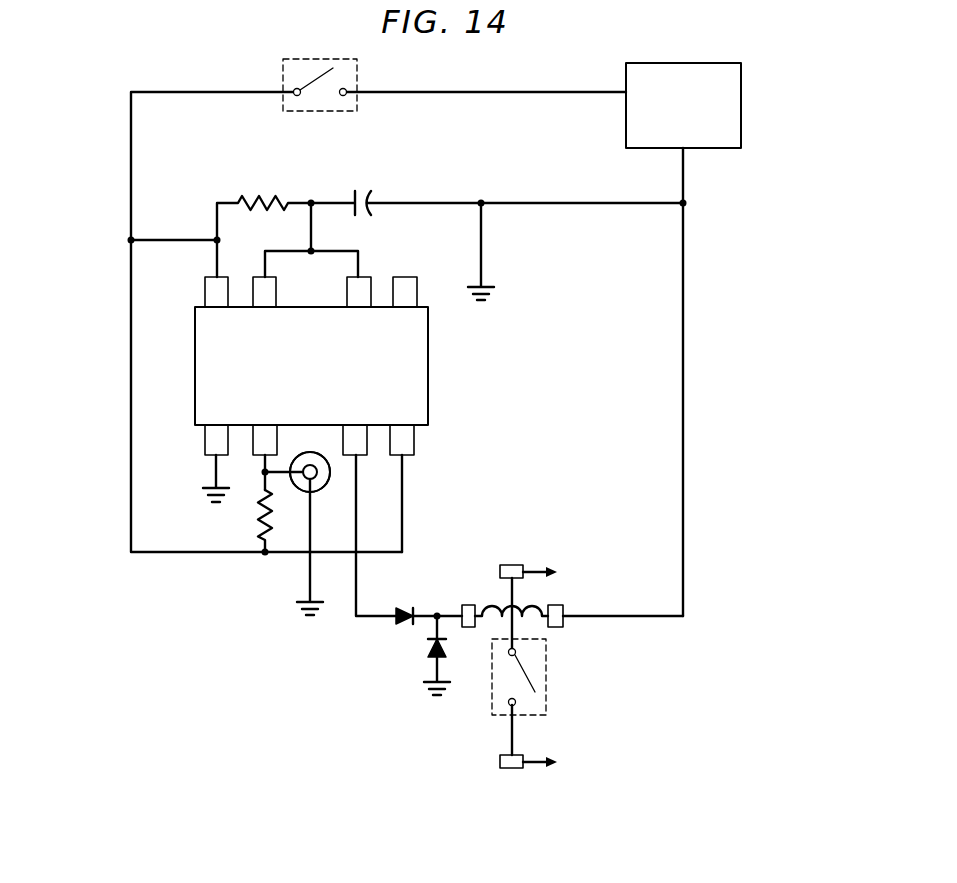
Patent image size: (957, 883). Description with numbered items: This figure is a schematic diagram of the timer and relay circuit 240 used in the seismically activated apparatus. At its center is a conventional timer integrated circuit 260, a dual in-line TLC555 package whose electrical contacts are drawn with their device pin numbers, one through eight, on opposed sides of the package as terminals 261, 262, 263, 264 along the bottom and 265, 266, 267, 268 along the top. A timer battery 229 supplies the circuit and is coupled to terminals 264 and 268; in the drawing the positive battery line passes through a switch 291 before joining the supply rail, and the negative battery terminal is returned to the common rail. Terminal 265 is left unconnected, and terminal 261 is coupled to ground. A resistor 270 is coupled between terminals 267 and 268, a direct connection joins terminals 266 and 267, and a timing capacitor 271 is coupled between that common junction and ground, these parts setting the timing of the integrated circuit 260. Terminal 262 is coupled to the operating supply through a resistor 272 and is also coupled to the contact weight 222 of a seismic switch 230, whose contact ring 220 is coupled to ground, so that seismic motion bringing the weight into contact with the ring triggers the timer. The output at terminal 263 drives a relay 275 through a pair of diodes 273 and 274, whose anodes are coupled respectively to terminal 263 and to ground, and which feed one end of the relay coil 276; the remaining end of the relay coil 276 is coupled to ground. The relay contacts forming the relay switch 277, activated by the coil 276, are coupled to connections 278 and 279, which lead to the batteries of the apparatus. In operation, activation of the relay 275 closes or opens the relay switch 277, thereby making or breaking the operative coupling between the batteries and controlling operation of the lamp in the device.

The timer and relay circuit 240 is at (107, 86).
The timer battery 229 is at (741, 107).
The switch 291 is at (357, 111).
The resistor 270 is at (252, 196).
The timing capacitor 271 is at (352, 192).
The timer integrated circuit 260 is at (297, 408).
The electrical contact 268 is at (207, 288).
The electrical contact 267 is at (259, 278).
The electrical contact 266 is at (363, 278).
The electrical contact 265 is at (412, 278).
The electrical contact 261 is at (206, 445).
The electrical contact 262 is at (255, 456).
The electrical contact 263 is at (360, 456).
The electrical contact 264 is at (407, 456).
The resistor 272 is at (258, 520).
The contact ring 220 is at (300, 489).
The contact weight 222 is at (314, 481).
The seismic switch 230 is at (338, 495).
The diode 273 is at (407, 608).
The diode 274 is at (428, 646).
The relay coil 276 is at (525, 604).
The relay 275 is at (538, 624).
The connection 278 is at (556, 571).
The relay switch 277 is at (492, 697).
The connection 279 is at (557, 763).